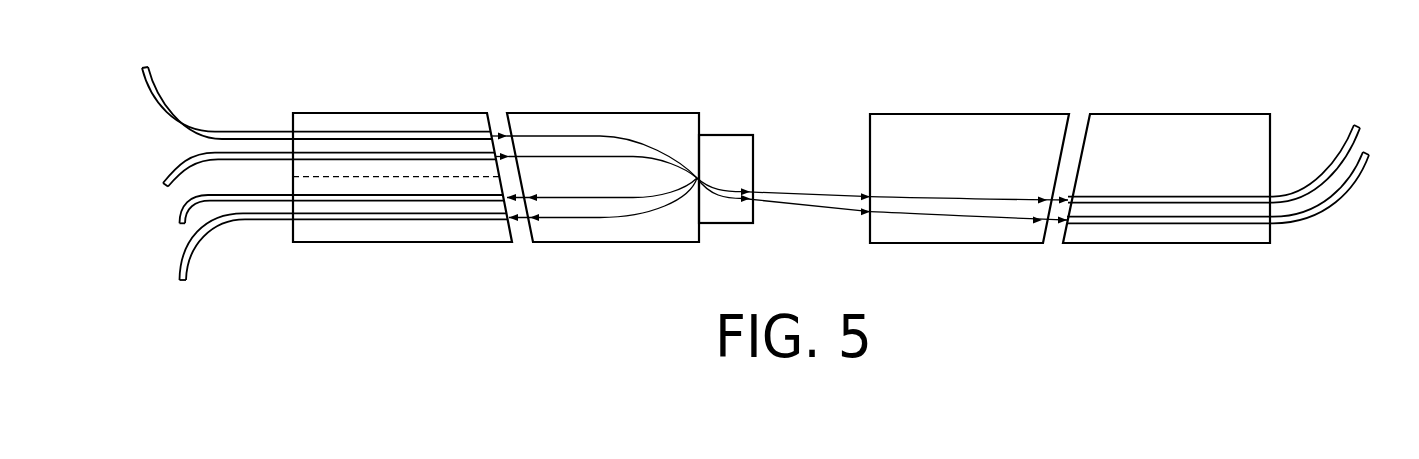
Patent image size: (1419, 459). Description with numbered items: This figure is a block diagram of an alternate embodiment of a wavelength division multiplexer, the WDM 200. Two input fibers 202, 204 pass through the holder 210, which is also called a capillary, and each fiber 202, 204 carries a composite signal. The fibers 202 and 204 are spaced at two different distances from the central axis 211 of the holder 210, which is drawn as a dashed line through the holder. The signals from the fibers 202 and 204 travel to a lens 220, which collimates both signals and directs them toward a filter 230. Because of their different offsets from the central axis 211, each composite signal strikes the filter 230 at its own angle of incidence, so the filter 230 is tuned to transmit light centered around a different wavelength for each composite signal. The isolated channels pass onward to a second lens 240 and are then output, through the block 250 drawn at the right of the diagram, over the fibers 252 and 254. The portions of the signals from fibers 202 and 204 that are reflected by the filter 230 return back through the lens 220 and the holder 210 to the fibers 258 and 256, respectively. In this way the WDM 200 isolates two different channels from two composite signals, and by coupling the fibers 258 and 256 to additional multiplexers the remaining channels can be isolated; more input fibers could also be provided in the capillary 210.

The WDM 200 is at (837, 23).
The input fiber 202 is at (160, 95).
The input fiber 204 is at (180, 167).
The holder 210 is at (376, 113).
The central axis 211 is at (293, 177).
The lens 220 is at (593, 113).
The filter 230 is at (725, 135).
The second lens 240 is at (973, 114).
The fiber holder / collimator block 250 is at (1183, 114).
The fiber 252 is at (1327, 177).
The fiber 254 is at (1340, 202).
The fiber 256 is at (180, 213).
The fiber 258 is at (181, 260).